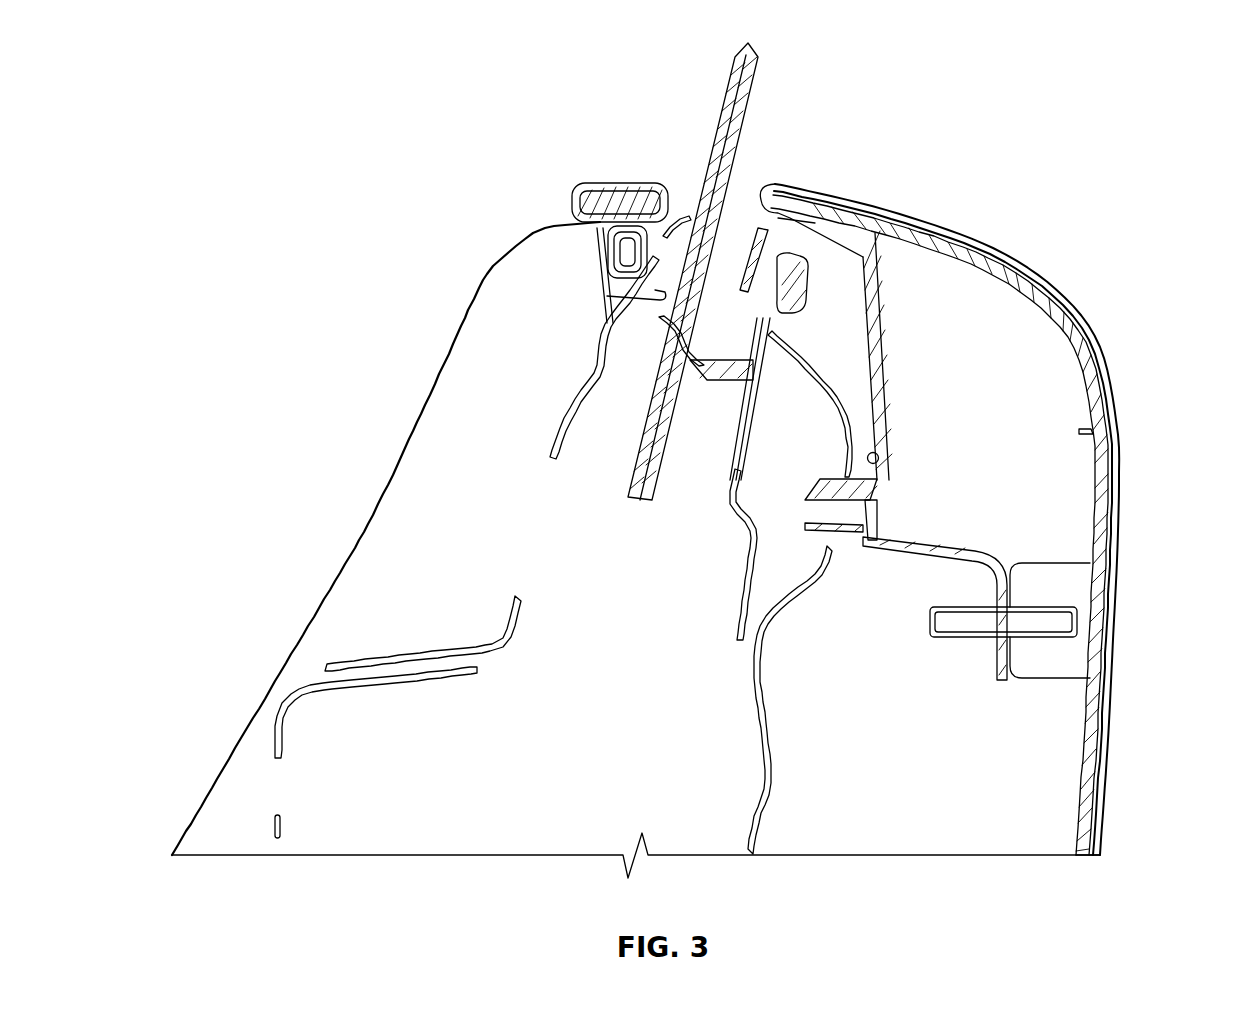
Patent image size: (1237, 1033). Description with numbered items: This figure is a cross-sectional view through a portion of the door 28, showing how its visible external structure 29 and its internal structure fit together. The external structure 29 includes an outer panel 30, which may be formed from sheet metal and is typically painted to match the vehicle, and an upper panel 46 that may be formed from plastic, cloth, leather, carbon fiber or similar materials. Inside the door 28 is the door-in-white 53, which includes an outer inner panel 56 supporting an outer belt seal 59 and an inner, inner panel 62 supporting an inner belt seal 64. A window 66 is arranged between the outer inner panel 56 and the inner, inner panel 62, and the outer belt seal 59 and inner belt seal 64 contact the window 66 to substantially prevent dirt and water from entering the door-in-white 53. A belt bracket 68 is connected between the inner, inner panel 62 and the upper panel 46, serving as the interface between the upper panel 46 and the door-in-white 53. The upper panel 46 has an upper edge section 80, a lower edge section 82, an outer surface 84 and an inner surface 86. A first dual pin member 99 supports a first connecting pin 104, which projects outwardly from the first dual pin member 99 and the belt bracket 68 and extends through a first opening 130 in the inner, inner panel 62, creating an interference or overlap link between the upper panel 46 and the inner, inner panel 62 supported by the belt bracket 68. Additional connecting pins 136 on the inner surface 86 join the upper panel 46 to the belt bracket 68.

The door 28 is at (1170, 888).
The external structure 29 is at (372, 504).
The outer panel 30 is at (333, 575).
The upper panel 46 is at (974, 527).
The door-in-white 53 is at (818, 845).
The outer inner panel 56 is at (556, 428).
The outer belt seal 59 is at (590, 193).
The inner, inner panel 62 is at (766, 728).
The inner belt seal 64 is at (765, 354).
The window 66 is at (727, 90).
The belt bracket 68 is at (896, 356).
The upper edge section 80 is at (797, 203).
The lower edge section 82 is at (1080, 856).
The outer surface 84 is at (1118, 398).
The inner surface 86 is at (1095, 477).
The first dual pin member 99 is at (882, 466).
The first connecting pin 104 is at (753, 523).
The first opening 130 is at (840, 477).
The additional connecting pins 136 is at (937, 640).